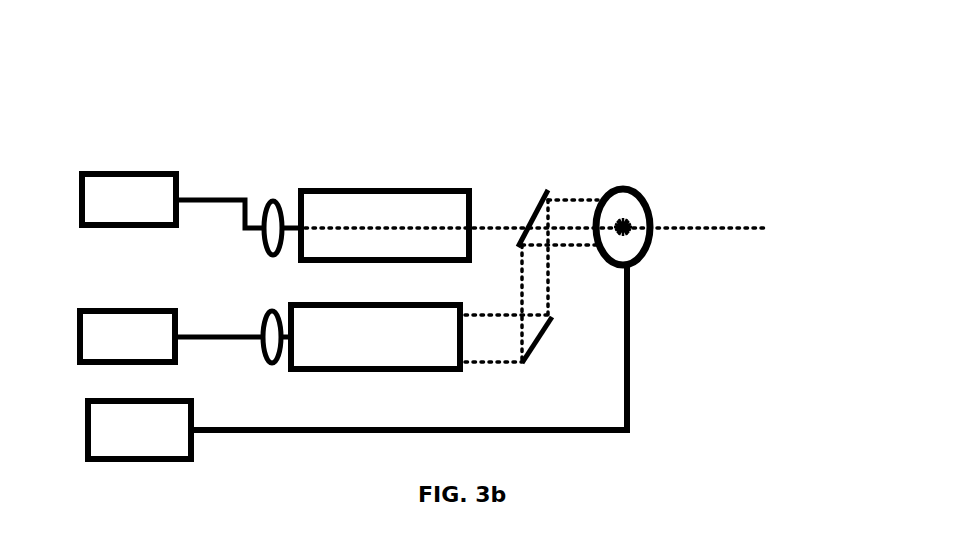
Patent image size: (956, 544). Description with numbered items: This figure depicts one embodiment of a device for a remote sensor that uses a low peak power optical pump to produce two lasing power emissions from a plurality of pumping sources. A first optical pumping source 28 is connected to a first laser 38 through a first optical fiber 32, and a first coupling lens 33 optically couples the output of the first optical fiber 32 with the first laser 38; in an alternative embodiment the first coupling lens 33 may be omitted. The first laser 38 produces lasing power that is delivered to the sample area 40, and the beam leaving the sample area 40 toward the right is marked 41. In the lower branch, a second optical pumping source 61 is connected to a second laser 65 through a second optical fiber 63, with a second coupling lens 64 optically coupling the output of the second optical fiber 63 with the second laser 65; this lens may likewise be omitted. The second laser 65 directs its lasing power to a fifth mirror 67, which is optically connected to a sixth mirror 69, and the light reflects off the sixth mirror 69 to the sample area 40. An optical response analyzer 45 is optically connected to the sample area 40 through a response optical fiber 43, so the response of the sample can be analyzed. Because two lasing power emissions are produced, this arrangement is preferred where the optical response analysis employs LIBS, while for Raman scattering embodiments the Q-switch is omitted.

The first optical pumping source 28 is at (129, 199).
The first optical fiber 32 is at (247, 193).
The first coupling lens 33 is at (280, 196).
The first laser 38 is at (414, 186).
The sample area 40 is at (638, 190).
The output beam 41 is at (742, 233).
The response optical fiber 43 is at (632, 290).
The optical response analyzer 45 is at (359, 430).
The second optical pumping source 61 is at (127, 336).
The second optical fiber 63 is at (215, 327).
The second coupling lens 64 is at (270, 366).
The second laser 65 is at (375, 337).
The fifth mirror 67 is at (541, 343).
The sixth mirror 69 is at (530, 226).